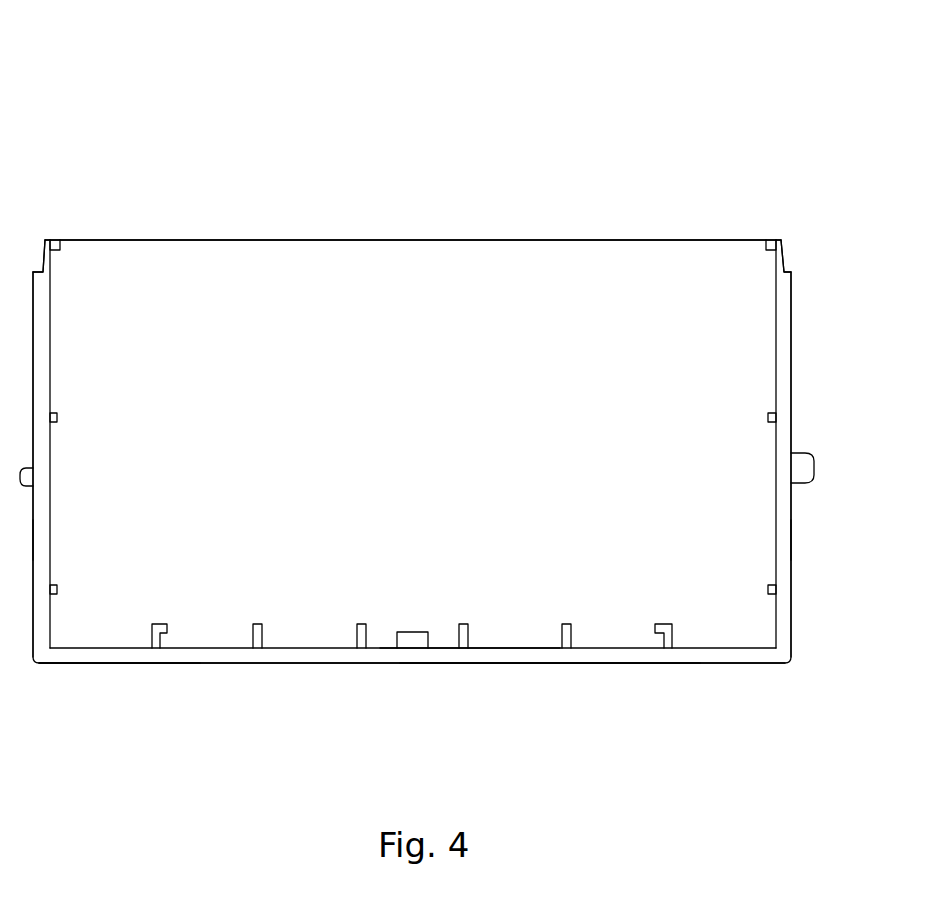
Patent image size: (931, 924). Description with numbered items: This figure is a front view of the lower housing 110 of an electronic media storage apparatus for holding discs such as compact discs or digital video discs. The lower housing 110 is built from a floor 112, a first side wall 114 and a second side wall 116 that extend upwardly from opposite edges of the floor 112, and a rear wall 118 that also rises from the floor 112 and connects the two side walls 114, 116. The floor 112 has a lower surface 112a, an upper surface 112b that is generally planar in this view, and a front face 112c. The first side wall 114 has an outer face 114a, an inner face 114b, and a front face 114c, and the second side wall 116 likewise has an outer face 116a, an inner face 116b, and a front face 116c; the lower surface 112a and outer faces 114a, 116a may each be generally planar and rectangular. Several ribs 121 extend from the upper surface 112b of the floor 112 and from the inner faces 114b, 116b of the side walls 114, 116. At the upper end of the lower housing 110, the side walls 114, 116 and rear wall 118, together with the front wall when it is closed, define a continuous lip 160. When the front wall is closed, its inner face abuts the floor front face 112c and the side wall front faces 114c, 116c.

The lower housing 110 is at (507, 133).
The floor 112 is at (653, 676).
The lower surface 112a is at (538, 663).
The upper surface 112b is at (522, 648).
The front face 112c is at (82, 663).
The first side wall 114 is at (62, 354).
The outer face 114a is at (24, 486).
The inner face 114b is at (50, 438).
The front face 114c is at (43, 542).
The second side wall 116 is at (763, 367).
The outer face 116a is at (800, 483).
The inner face 116b is at (776, 328).
The front face 116c is at (776, 542).
The rear wall 118 is at (252, 232).
The rib 121 is at (57, 590).
The continuous lip 160 is at (37, 250).